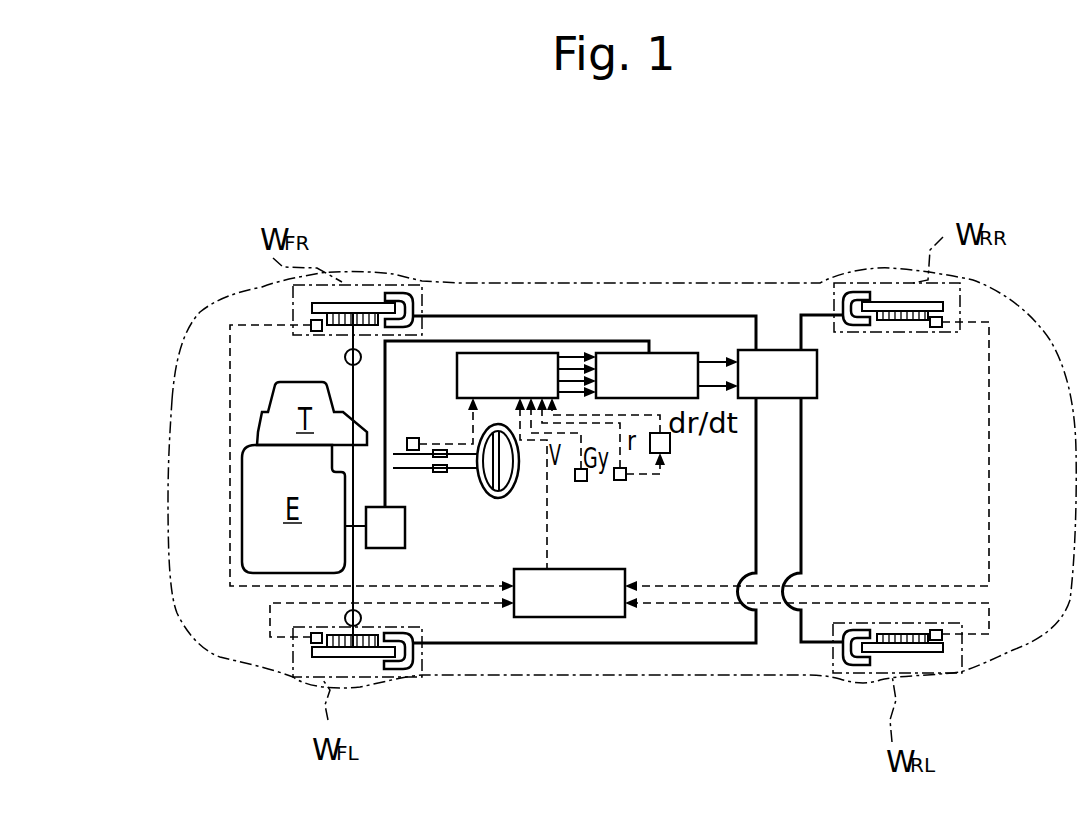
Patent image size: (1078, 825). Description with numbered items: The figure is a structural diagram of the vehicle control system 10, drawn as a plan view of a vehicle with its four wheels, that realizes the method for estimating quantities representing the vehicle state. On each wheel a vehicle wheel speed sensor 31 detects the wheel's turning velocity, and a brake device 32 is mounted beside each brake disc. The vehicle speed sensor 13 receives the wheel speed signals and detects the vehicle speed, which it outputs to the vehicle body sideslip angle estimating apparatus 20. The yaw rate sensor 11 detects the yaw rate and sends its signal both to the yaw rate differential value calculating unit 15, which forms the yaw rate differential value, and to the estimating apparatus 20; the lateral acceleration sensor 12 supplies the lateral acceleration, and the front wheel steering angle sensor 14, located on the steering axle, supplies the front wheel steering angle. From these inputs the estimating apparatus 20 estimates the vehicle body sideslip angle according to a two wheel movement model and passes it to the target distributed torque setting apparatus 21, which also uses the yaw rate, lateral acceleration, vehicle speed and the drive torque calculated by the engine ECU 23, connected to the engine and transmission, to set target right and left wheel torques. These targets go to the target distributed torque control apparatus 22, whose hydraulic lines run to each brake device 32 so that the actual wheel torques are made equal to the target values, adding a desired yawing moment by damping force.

The vehicle control system 10 is at (654, 245).
The yaw rate sensor 11 is at (620, 480).
The lateral acceleration sensor 12 is at (581, 481).
The vehicle speed sensor 13 is at (625, 612).
The front wheel steering angle sensor 14 is at (411, 438).
The yaw rate differential value calculating unit 15 is at (670, 445).
The vehicle body sideslip angle estimating apparatus 20 is at (515, 353).
The target distributed torque setting apparatus 21 is at (660, 353).
The target distributed torque control apparatus 22 is at (785, 350).
The engine ECU 23 is at (405, 527).
The vehicle wheel speed sensor 31 is at (315, 331).
The brake device 32 is at (402, 289).